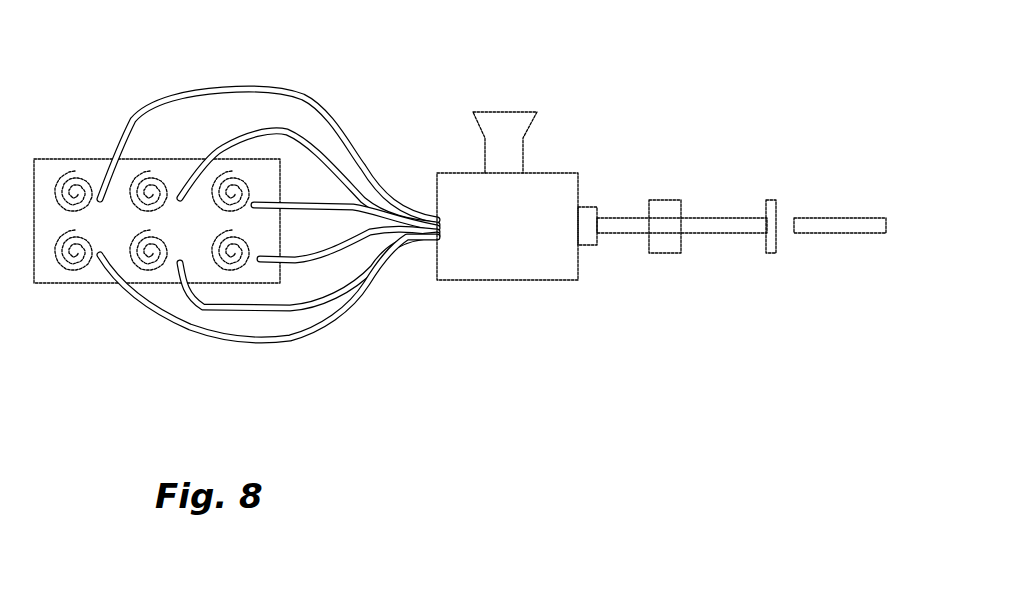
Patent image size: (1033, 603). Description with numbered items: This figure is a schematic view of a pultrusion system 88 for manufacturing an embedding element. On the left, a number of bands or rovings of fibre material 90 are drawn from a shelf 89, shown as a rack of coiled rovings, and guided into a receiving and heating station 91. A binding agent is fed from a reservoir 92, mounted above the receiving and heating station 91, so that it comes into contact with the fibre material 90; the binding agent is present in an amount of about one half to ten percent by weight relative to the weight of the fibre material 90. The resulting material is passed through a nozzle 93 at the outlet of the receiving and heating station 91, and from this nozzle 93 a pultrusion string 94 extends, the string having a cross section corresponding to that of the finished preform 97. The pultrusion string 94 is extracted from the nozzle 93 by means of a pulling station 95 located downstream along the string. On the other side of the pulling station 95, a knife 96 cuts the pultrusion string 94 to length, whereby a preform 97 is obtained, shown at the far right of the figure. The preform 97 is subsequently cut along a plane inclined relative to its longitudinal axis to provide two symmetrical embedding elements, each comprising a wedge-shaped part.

The processing system 88 is at (455, 418).
The shelf 89 is at (78, 157).
The fibre material 90 is at (71, 262).
The receiving and heating station 91 is at (510, 258).
The reservoir 92 is at (535, 120).
The nozzle 93 is at (590, 237).
The pultrusion string 94 is at (620, 233).
The pulling station 95 is at (664, 211).
The knife 96 is at (771, 200).
The preform 97 is at (837, 233).